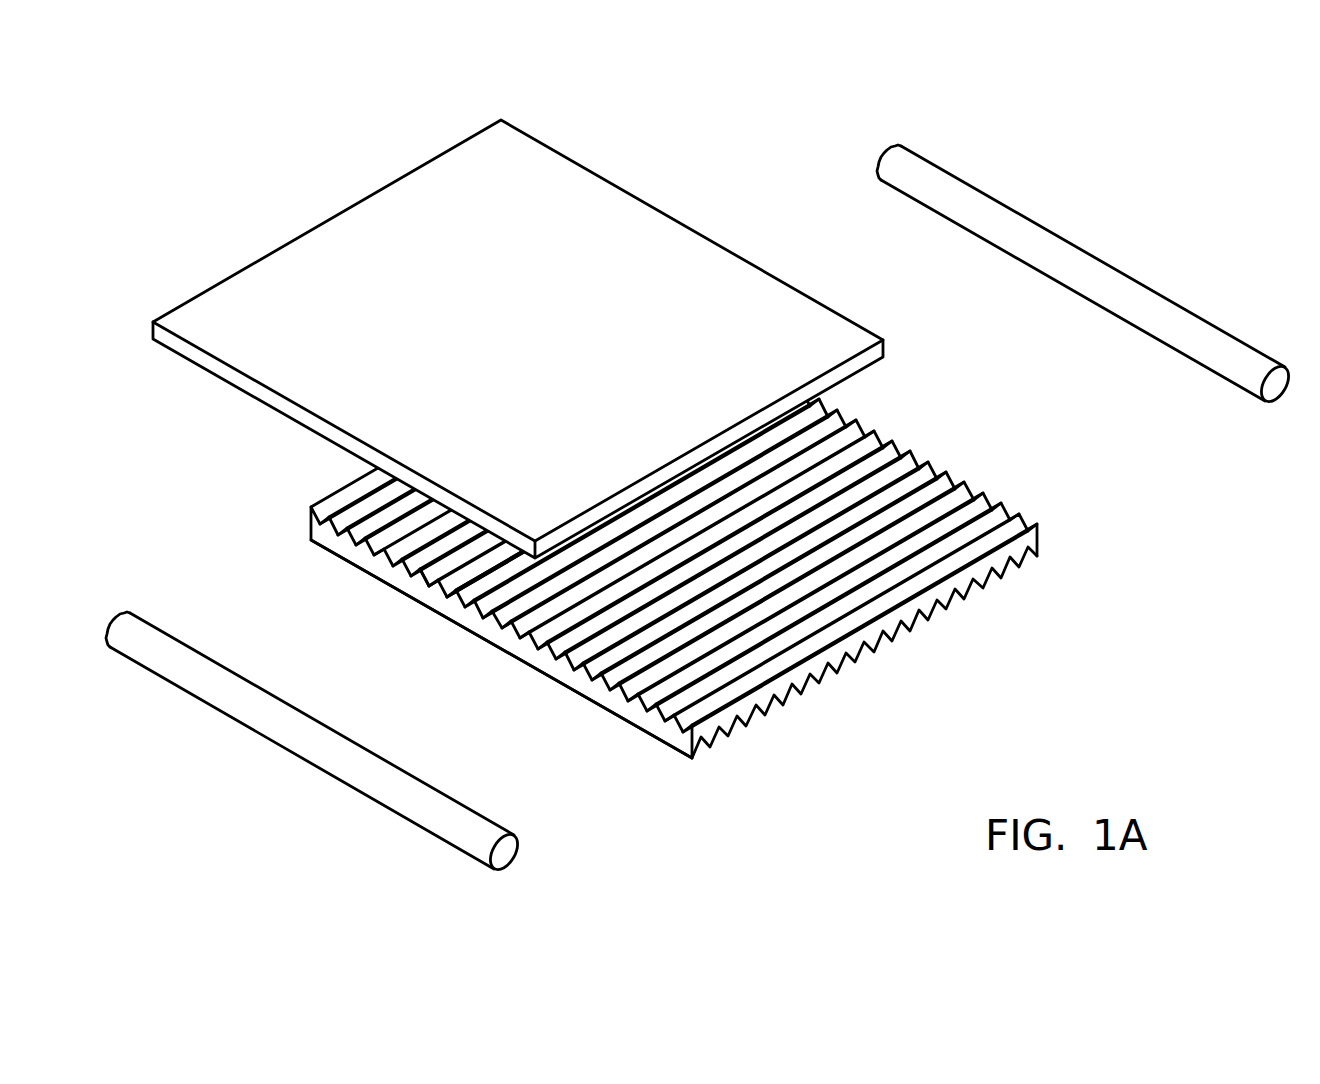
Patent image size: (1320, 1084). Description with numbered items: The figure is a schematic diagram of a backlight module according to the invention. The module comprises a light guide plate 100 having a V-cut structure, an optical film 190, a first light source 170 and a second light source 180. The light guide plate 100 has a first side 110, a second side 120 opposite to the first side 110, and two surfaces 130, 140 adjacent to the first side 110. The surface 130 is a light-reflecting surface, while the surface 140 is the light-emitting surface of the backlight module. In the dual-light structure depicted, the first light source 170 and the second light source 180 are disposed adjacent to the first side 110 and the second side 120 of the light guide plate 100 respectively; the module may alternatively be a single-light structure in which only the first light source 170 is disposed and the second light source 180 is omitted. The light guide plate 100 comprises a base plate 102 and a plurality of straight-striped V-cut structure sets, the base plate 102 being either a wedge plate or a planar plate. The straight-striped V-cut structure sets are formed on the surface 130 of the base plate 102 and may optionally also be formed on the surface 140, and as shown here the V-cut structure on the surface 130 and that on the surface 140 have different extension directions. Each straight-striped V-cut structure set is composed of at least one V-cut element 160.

The light guide plate 100 is at (653, 555).
The base plate 102 is at (419, 586).
The first side 110 is at (566, 680).
The second side 120 is at (1002, 493).
The surface 130 is at (776, 723).
The surface 140 is at (490, 586).
The V-cut element 160 is at (918, 622).
The first light source 170 is at (290, 737).
The second light source 180 is at (1064, 252).
The optical film 190 is at (367, 212).